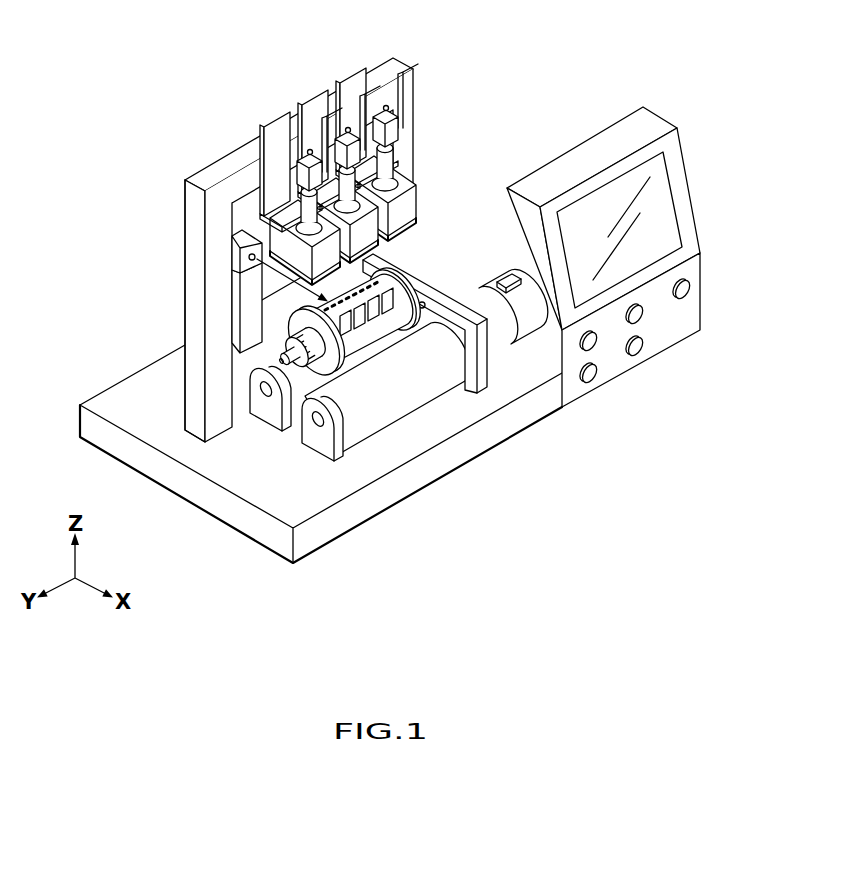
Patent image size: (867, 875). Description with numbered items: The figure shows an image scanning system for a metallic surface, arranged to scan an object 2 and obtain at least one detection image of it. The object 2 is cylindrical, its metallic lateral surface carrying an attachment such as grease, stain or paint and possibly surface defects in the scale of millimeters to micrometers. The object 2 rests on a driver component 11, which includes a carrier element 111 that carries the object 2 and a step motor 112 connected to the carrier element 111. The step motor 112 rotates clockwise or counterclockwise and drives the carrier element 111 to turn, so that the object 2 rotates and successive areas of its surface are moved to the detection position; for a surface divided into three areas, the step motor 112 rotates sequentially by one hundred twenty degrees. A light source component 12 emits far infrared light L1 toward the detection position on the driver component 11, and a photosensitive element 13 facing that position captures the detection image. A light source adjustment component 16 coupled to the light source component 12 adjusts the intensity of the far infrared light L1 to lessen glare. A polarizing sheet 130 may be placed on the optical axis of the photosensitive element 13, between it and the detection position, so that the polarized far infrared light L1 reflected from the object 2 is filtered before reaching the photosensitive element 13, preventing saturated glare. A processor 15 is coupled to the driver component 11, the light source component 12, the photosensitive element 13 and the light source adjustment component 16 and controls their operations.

The object 2 is at (364, 349).
The driver component 11 is at (544, 481).
The carrier element 111 is at (424, 378).
The step motor 112 is at (503, 343).
The light source component 12 is at (240, 246).
The photosensitive element 13 is at (383, 125).
The polarizing sheet 130 is at (343, 258).
The processor 15 is at (622, 370).
The light source adjustment component 16 is at (237, 318).
The far infrared light L1 is at (262, 284).